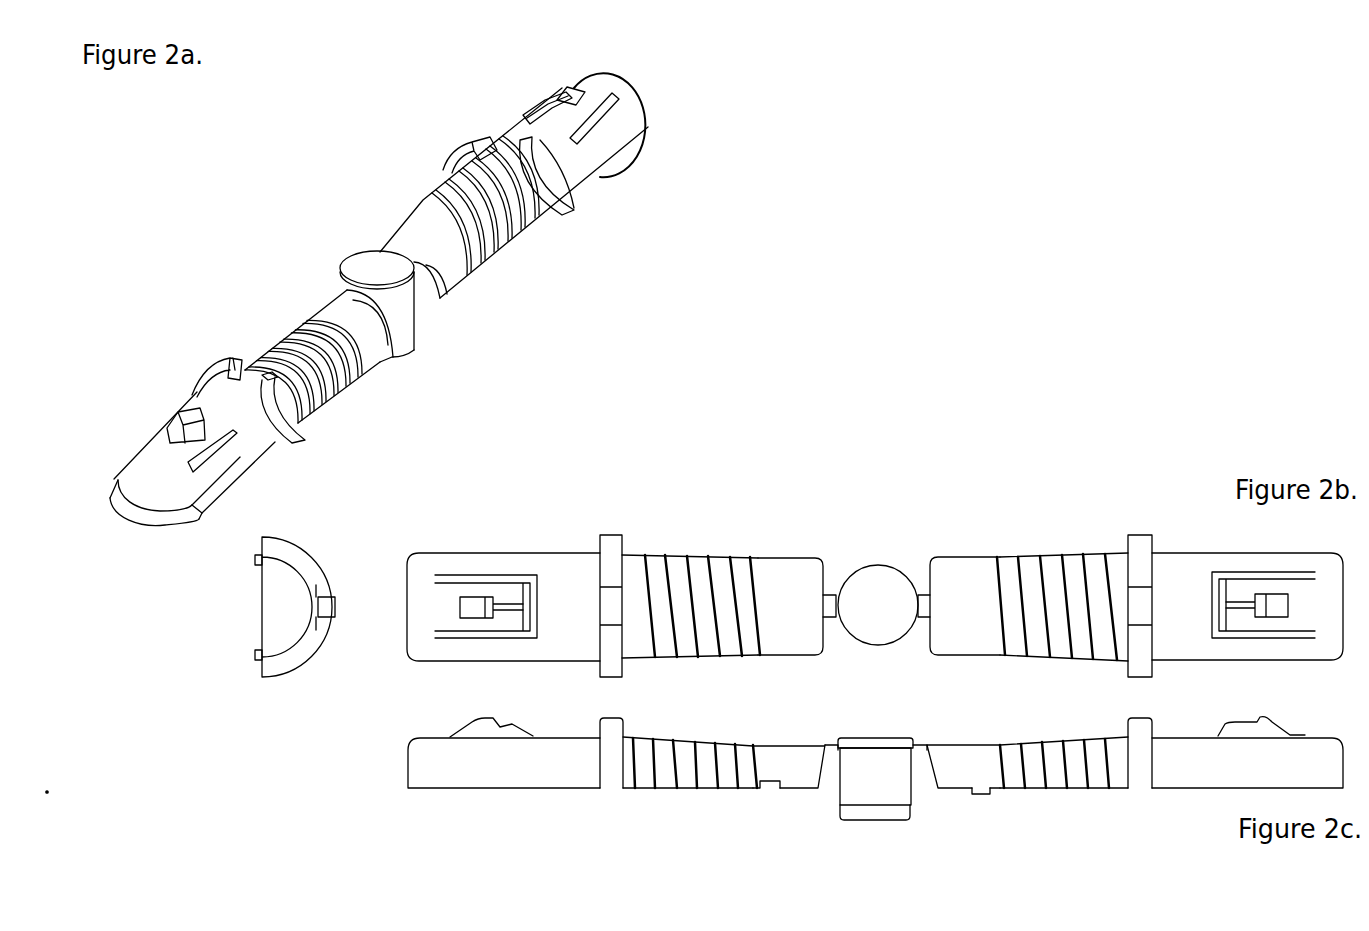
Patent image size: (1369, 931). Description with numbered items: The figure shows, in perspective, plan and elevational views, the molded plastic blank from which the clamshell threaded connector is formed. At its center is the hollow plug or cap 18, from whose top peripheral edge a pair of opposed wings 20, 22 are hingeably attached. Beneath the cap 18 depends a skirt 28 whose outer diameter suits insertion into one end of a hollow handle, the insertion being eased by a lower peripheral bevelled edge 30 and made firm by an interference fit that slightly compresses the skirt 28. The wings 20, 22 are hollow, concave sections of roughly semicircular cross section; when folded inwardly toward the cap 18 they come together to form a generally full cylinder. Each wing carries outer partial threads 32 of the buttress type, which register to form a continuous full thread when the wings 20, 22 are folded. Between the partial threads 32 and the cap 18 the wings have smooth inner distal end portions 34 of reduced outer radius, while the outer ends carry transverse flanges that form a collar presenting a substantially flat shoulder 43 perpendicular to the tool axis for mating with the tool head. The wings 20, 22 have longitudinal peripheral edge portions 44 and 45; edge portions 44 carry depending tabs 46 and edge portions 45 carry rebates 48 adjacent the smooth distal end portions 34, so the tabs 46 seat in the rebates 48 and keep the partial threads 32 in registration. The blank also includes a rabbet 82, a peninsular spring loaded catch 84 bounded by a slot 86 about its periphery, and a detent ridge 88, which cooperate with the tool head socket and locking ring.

In FIG. 2a, the central plug or cap 18 is at (338, 252).
In FIG. 2c, the central plug or cap 18 is at (853, 822).
In FIG. 2a, the wing 20 is at (123, 455).
In FIG. 2b, the wing 20 is at (514, 606).
In FIG. 2c, the wing 20 is at (572, 793).
In FIG. 2a, the wing 22 is at (652, 106).
In FIG. 2b, the wing 22 is at (1235, 606).
In FIG. 2c, the wing 22 is at (1178, 791).
In FIG. 2a, the skirt 28 is at (400, 312).
In FIG. 2c, the skirt 28 is at (897, 780).
In FIG. 2a, the lower peripheral bevelled edge 30 is at (404, 352).
In FIG. 2c, the lower peripheral bevelled edge 30 is at (884, 812).
In FIG. 2a, the outer partial threads 32 is at (424, 200).
In FIG. 2b, the outer partial threads 32 is at (725, 550).
In FIG. 2c, the outer partial threads 32 is at (875, 762).
In FIG. 2b, the smooth inner distal end portions 34 is at (958, 553).
In FIG. 2a, the flat shoulder 43 is at (551, 215).
In FIG. 2c, the longitudinal peripheral edge portion 44 is at (1040, 791).
In FIG. 2c, the longitudinal peripheral edge portion 45 is at (803, 789).
In FIG. 2c, the depending tab 46 is at (984, 796).
In FIG. 2c, the rebate 48 is at (768, 789).
In FIG. 2a, the rabbet 82 is at (514, 143).
In FIG. 2a, the peninsular spring loaded catch 84 is at (520, 102).
In FIG. 2b, the peninsular spring loaded catch 84 is at (503, 634).
In FIG. 2c, the peninsular spring loaded catch 84 is at (877, 727).
In FIG. 2a, the slot 86 is at (600, 128).
In FIG. 2b, the slot 86 is at (478, 573).
In FIG. 2a, the detent ridge 88 is at (527, 97).
In FIG. 2b, the detent ridge 88 is at (512, 590).